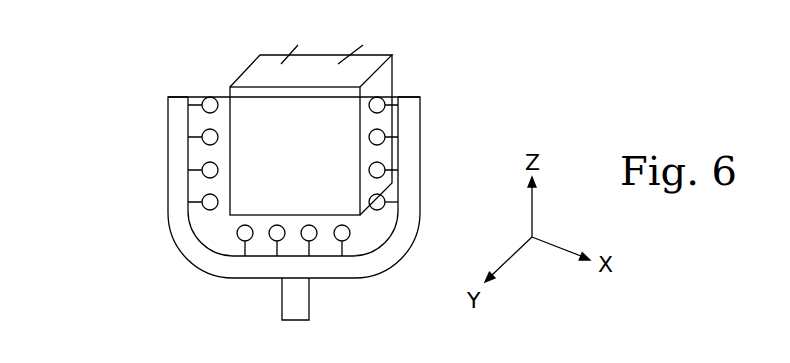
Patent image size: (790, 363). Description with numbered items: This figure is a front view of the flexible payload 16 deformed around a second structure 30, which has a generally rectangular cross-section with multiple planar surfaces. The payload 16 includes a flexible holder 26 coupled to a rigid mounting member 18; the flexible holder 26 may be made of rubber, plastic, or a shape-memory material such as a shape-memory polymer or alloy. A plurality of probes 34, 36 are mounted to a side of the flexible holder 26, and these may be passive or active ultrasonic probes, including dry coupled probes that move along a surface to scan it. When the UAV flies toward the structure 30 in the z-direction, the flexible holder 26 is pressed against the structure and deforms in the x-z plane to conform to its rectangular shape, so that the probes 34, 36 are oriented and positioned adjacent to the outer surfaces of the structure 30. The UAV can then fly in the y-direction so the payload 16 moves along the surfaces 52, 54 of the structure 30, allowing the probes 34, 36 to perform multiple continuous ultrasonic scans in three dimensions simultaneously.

The payload 16 is at (88, 262).
The rigid mounting member 18 is at (286, 312).
The flexible holder 26 is at (167, 192).
The structure 30 is at (228, 64).
The probe 34 is at (236, 236).
The probe 36 is at (385, 205).
The surface 52 is at (391, 91).
The surface 54 is at (352, 218).